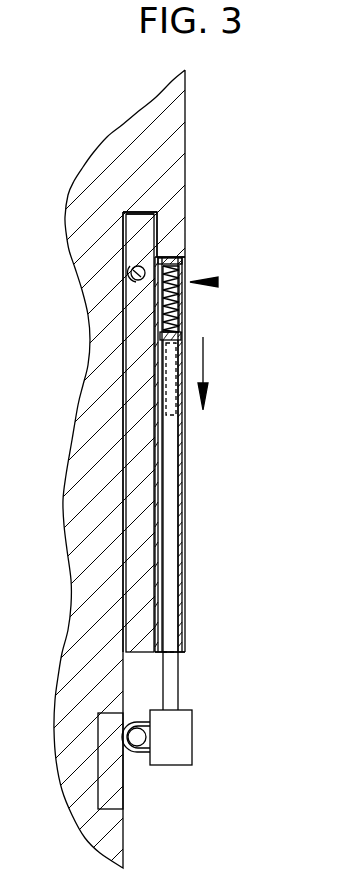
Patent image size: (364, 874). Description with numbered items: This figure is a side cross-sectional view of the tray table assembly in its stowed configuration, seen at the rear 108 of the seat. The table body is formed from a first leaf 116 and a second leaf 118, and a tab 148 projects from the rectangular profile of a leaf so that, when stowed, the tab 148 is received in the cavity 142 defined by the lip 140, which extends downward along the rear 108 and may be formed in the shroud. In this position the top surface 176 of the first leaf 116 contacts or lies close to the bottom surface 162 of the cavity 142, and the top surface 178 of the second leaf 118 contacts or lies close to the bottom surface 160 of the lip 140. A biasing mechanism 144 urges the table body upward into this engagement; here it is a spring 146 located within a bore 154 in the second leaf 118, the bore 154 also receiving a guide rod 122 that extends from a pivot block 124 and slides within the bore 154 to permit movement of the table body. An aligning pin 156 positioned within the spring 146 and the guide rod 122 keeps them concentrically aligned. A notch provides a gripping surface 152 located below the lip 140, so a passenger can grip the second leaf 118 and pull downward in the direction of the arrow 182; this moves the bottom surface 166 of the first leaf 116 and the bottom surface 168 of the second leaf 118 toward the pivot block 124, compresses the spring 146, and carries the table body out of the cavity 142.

The rear 108 is at (210, 123).
The first leaf 116 is at (137, 444).
The second leaf 118 is at (186, 503).
The guide rod 122 is at (177, 692).
The pivot block 124 is at (180, 738).
The lip 140 is at (182, 237).
The cavity 142 is at (143, 212).
The biasing mechanism 144 is at (217, 282).
The spring 146 is at (146, 314).
The tab 148 is at (124, 240).
The gripping surface 152 is at (181, 305).
The bore 154 is at (181, 322).
The aligning pin 156 is at (181, 415).
The bottom surface of the lip 160 is at (132, 268).
The bottom surface of the cavity 162 is at (123, 212).
The bottom surface of the first leaf 166 is at (137, 653).
The bottom surface of the second leaf 168 is at (185, 653).
The top surface of the first leaf 176 is at (156, 206).
The top surface of the second leaf 178 is at (181, 252).
The arrow 182 is at (203, 372).